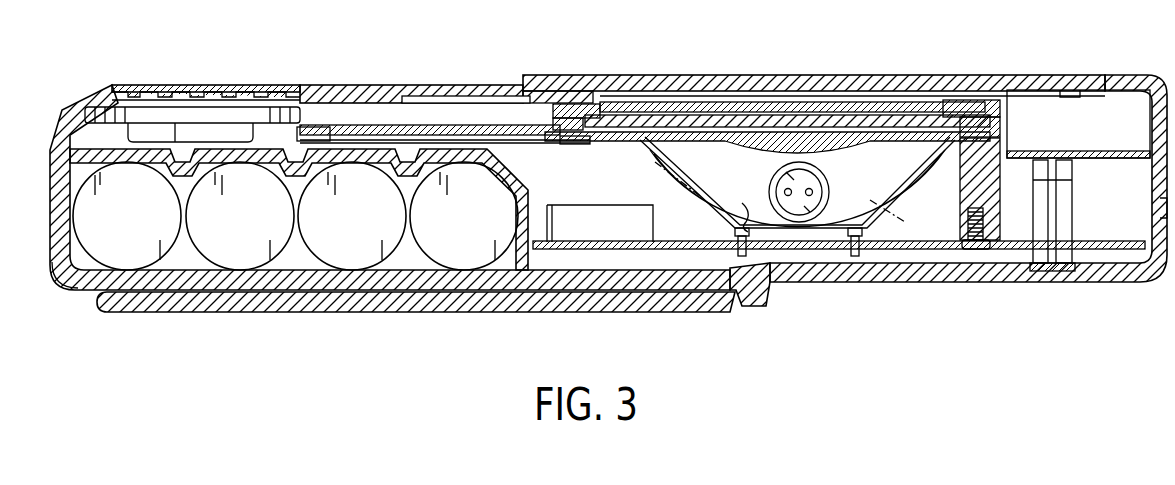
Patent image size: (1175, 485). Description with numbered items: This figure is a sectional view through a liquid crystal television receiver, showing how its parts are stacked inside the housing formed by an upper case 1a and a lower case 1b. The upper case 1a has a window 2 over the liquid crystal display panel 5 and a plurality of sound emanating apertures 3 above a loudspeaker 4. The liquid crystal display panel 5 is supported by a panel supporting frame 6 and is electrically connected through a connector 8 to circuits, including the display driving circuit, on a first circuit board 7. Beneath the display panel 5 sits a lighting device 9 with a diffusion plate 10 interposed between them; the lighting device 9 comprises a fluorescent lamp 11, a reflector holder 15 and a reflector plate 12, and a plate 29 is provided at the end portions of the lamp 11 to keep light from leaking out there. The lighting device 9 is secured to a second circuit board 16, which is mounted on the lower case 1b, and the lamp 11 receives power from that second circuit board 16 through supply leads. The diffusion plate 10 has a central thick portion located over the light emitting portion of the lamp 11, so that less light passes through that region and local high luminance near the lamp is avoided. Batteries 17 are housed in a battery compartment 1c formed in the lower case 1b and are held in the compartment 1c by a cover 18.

The upper case 1a is at (386, 93).
The lower case 1b is at (1133, 268).
The battery compartment 1c is at (289, 294).
The window 2 is at (873, 84).
The sound emanating apertures 3 is at (207, 89).
The loudspeaker 4 is at (148, 134).
The liquid crystal display panel 5 is at (805, 122).
The panel supporting frame 6 is at (592, 107).
The first circuit board 7 is at (466, 127).
The connector 8 is at (571, 141).
The lighting device 9 is at (912, 183).
The diffusion plate 10 is at (830, 149).
The fluorescent lamp 11 is at (773, 183).
The reflector plate 12 is at (742, 203).
The reflector holder 15 is at (893, 212).
The second circuit board 16 is at (690, 241).
The batteries 17 is at (118, 231).
The cover 18 is at (88, 291).
The plate 29 is at (662, 176).